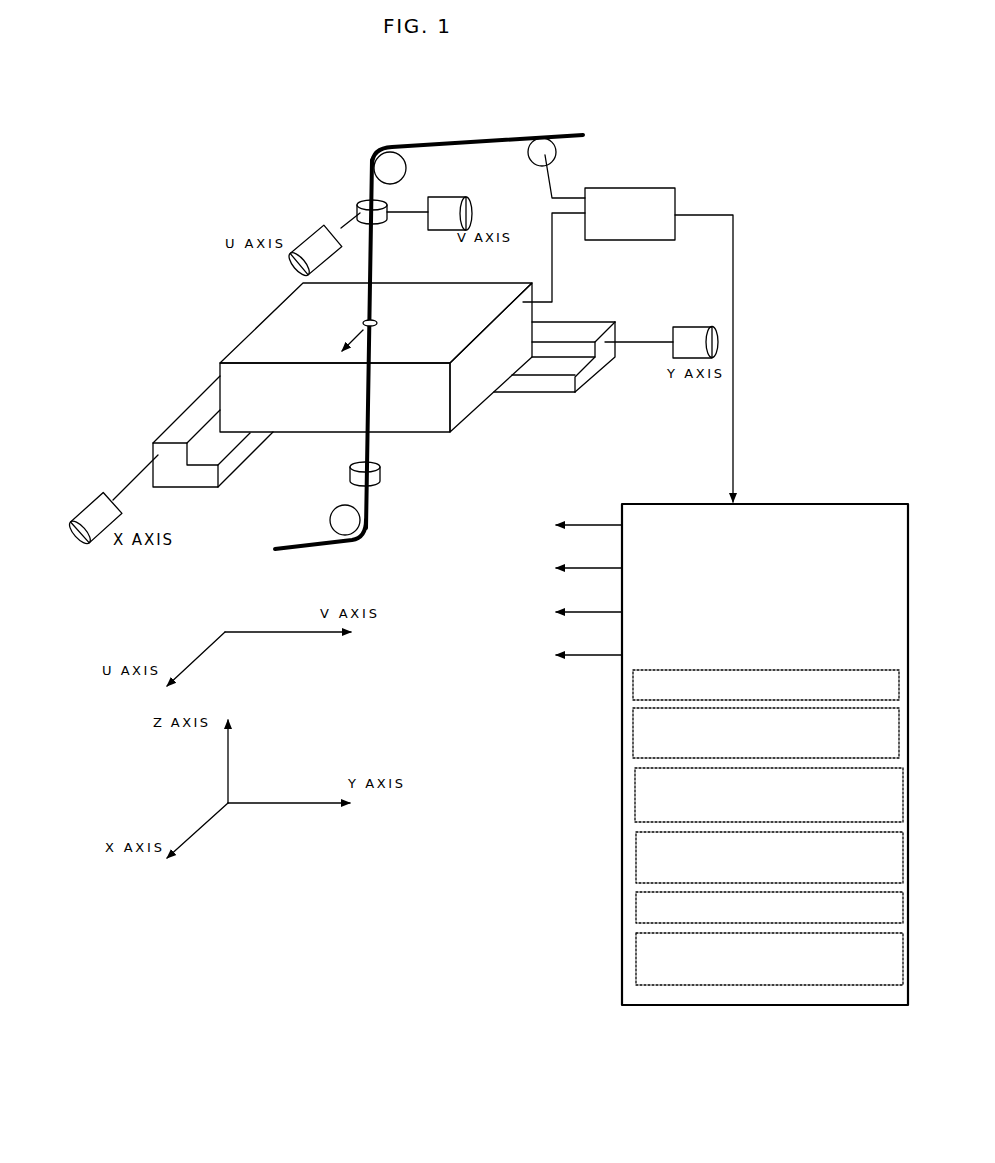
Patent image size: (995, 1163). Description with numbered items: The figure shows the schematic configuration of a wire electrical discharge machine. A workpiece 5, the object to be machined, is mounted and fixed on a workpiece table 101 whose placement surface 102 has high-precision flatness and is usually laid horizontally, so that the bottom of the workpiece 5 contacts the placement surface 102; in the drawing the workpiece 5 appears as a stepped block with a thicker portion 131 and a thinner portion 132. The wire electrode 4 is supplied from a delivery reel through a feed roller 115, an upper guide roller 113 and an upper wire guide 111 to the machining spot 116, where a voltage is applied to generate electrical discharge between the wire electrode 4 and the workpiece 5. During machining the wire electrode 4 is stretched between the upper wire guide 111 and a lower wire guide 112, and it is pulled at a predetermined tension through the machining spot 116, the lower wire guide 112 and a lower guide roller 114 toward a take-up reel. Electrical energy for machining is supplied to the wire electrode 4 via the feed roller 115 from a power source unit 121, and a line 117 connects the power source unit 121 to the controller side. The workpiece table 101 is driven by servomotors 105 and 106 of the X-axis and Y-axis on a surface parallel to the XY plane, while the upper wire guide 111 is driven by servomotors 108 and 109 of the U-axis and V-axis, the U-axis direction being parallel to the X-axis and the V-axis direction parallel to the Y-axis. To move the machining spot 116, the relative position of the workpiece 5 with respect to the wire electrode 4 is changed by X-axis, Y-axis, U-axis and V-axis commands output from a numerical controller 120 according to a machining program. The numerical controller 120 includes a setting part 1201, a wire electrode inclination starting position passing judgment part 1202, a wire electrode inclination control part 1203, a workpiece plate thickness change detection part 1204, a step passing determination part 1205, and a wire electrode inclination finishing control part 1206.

The wire electrode 4 is at (452, 141).
The workpiece 5 is at (260, 378).
The workpiece table 101 is at (588, 372).
The placement surface 102 is at (560, 360).
The X-axis servomotor 105 is at (88, 498).
The Y-axis servomotor 106 is at (690, 320).
The U-axis servomotor 108 is at (306, 226).
The V-axis servomotor 109 is at (457, 198).
The upper wire guide 111 is at (358, 208).
The lower wire guide 112 is at (382, 477).
The upper guide roller 113 is at (397, 167).
The lower guide roller 114 is at (330, 520).
The feed roller 115 is at (557, 152).
The machining spot 116 is at (356, 318).
The signal line 117 is at (720, 212).
The numerical controller 120 is at (684, 498).
The power source unit for machining 121 is at (661, 182).
The thick plate portion of workpiece 131 is at (260, 350).
The thin plate portion of workpiece 132 is at (328, 436).
The setting part 1201 is at (630, 690).
The wire electrode inclination starting position passing judgment part 1202 is at (630, 730).
The wire electrode inclination control part 1203 is at (632, 792).
The workpiece plate thickness change detection part 1204 is at (633, 852).
The step passing determination part 1205 is at (633, 902).
The wire electrode inclination finishing control part 1206 is at (633, 954).